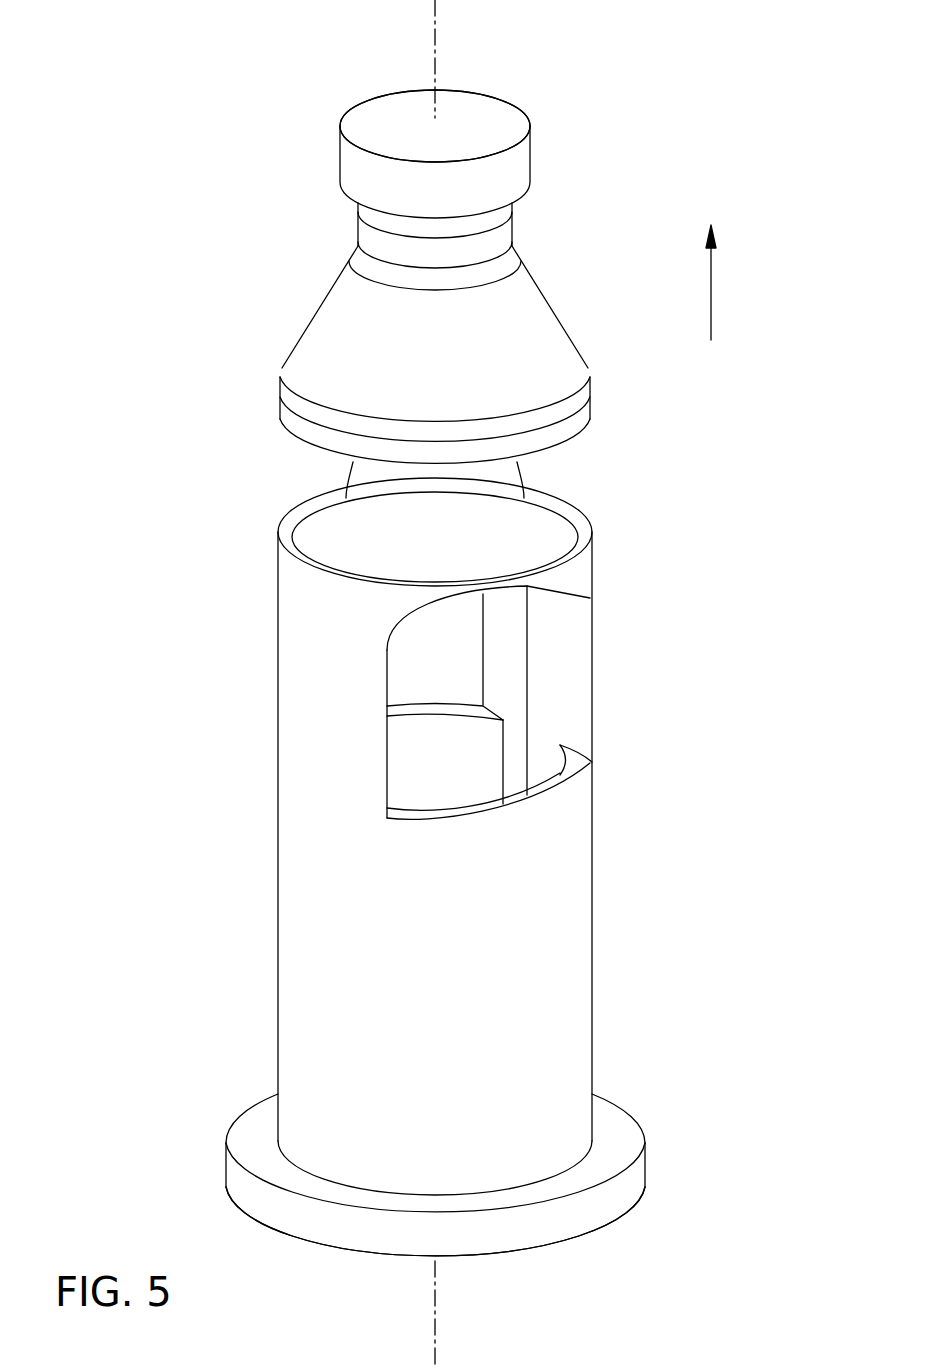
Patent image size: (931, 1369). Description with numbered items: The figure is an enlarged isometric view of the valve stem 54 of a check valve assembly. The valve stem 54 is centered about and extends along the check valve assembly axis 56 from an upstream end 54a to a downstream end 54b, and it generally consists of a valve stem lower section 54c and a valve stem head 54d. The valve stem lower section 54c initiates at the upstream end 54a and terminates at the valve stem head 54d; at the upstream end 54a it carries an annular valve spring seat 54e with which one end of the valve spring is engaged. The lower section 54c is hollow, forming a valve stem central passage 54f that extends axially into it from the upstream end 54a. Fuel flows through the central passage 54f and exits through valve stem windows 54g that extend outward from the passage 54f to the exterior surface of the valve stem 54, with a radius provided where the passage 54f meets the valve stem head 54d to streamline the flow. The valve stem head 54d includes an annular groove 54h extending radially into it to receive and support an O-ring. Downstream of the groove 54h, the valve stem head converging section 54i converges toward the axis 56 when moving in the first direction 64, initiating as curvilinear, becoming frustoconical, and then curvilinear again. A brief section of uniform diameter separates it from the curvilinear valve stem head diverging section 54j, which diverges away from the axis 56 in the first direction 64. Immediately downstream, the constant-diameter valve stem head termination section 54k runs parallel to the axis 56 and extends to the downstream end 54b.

The valve stem 54 is at (677, 70).
The check valve assembly axis 56 is at (437, 52).
The first direction 64 is at (713, 300).
The upstream end 54a is at (270, 1227).
The downstream end 54b is at (398, 118).
The valve stem lower section 54c is at (244, 919).
The valve stem head 54d is at (260, 277).
The valve spring seat 54e is at (245, 1135).
The valve stem central passage 54f is at (417, 782).
The valve stem windows 54g is at (458, 653).
The annular groove 54h is at (298, 478).
The valve stem head converging section 54i is at (310, 342).
The valve stem head diverging section 54j is at (353, 213).
The valve stem head termination section 54k is at (347, 163).